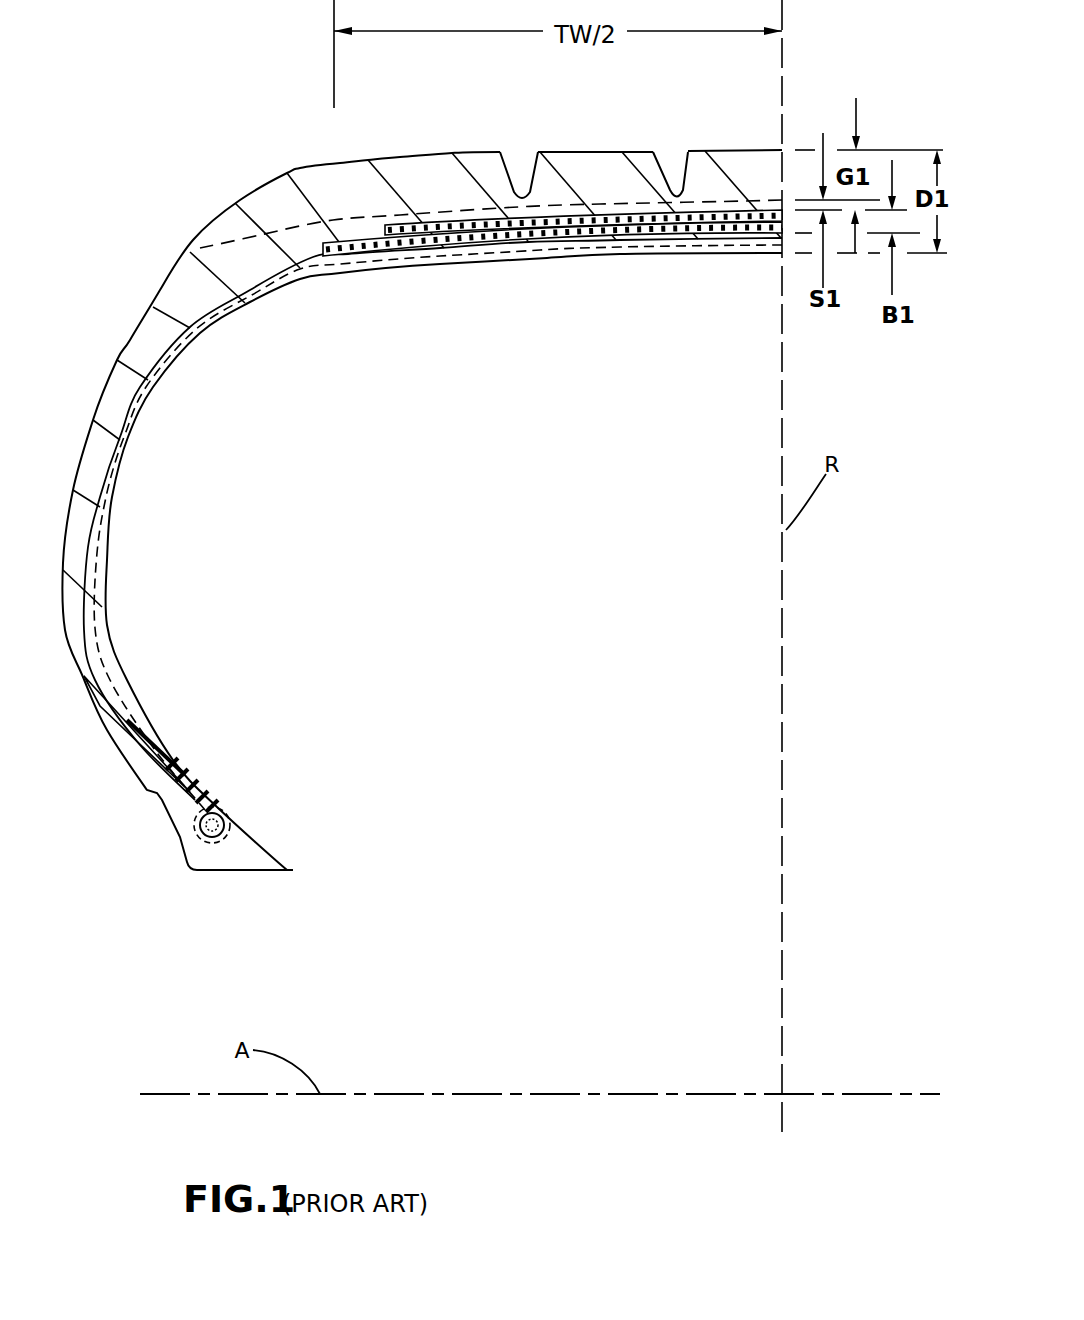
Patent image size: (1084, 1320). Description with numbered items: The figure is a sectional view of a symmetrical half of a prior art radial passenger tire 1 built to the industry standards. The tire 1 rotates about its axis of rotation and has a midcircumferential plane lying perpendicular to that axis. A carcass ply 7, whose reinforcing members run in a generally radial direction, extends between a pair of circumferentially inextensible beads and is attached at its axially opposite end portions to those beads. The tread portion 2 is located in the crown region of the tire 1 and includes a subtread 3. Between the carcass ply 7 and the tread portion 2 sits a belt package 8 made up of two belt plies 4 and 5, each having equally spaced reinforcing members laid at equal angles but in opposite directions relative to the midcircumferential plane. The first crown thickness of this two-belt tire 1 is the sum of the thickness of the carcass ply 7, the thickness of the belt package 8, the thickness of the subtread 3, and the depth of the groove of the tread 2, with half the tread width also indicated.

The tire 1 is at (560, 113).
The tread portion 2 is at (600, 174).
The subtread 3 is at (447, 213).
The belt ply 4 is at (547, 258).
The belt ply 5 is at (667, 238).
The carcass ply 7 is at (462, 265).
The belt package 8 is at (360, 227).